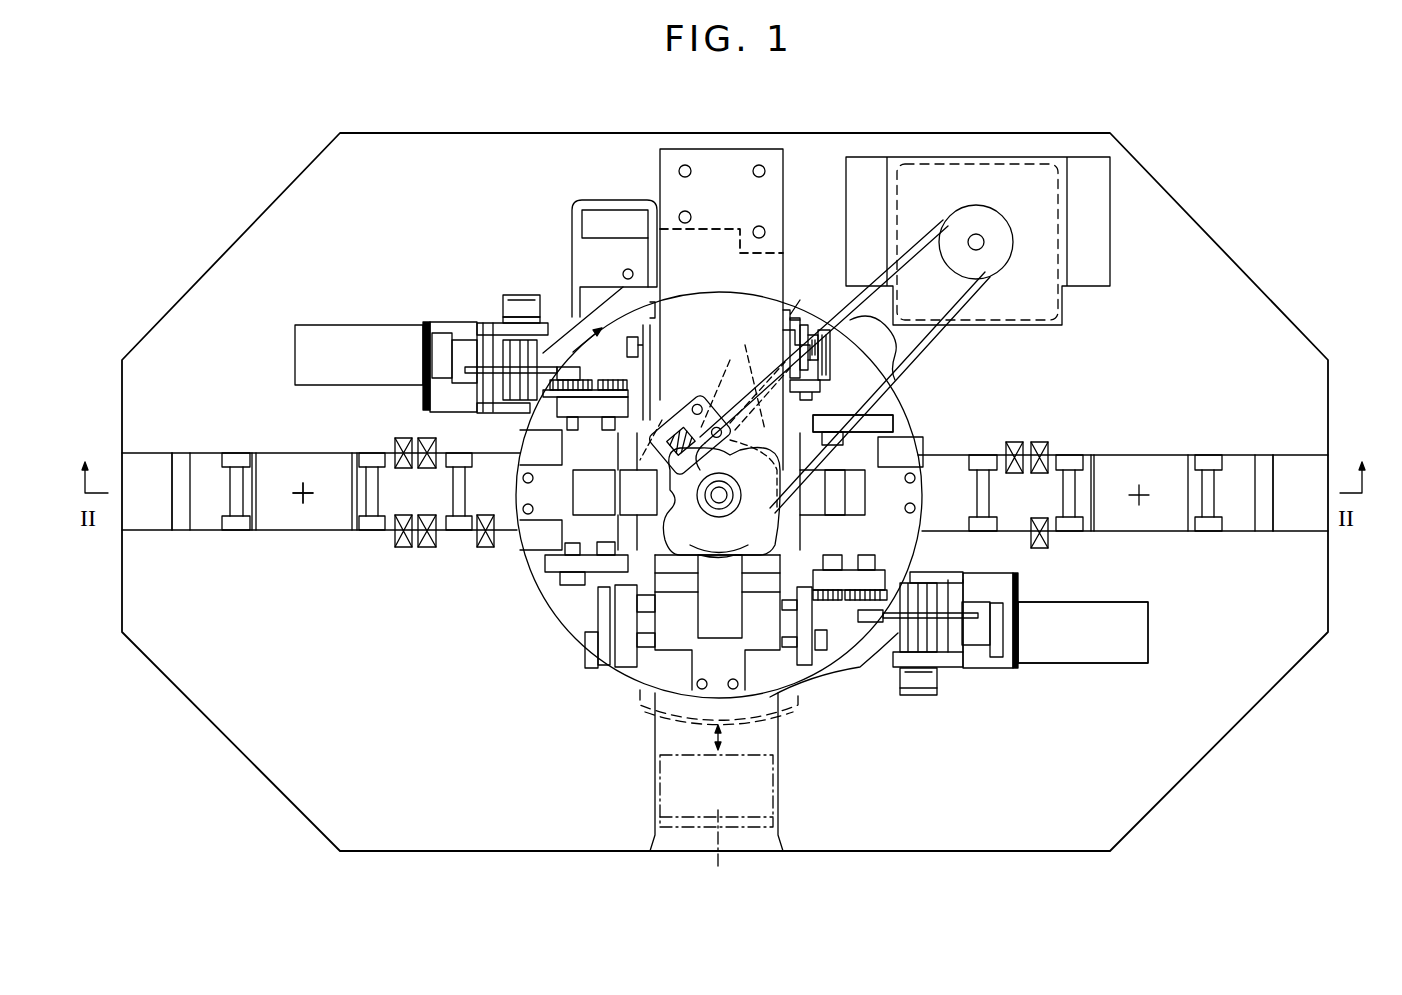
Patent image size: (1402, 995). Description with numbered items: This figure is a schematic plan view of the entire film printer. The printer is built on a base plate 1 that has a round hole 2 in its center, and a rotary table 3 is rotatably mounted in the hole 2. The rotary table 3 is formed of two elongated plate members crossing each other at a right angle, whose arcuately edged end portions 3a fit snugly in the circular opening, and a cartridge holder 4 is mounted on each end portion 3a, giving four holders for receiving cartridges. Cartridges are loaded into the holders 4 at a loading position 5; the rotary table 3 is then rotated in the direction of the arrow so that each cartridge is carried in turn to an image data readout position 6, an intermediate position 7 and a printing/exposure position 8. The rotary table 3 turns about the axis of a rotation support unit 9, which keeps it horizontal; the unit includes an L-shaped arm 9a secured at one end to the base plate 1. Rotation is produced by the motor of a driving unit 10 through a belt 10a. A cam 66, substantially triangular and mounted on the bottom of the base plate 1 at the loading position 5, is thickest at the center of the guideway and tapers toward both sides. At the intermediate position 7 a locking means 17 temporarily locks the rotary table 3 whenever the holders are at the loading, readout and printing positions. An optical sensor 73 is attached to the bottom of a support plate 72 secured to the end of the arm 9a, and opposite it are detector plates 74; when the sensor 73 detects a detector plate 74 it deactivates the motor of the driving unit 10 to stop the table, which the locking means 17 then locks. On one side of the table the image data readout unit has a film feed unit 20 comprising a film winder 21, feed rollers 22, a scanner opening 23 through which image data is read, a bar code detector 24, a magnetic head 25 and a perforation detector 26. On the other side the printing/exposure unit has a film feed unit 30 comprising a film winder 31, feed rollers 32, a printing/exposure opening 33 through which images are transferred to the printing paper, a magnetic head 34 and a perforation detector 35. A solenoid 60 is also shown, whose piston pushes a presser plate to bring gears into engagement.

The base plate 1 is at (404, 133).
The round hole 2 is at (555, 585).
The rotary table 3 is at (600, 620).
The arcuately edged end portions 3a is at (675, 675).
The cartridge holder 4 is at (637, 323).
The loading position 5 is at (670, 745).
The image data readout position 6 is at (500, 485).
The intermediate position 7 is at (800, 290).
The printing/exposure position 8 is at (935, 485).
The rotation support unit 9 is at (715, 280).
The L-shaped arm 9a is at (680, 255).
The driving unit 10 is at (1072, 305).
The belt 10a is at (940, 335).
The locking means 17 is at (600, 258).
The film feed unit 20 is at (240, 445).
The film winder 21 is at (152, 532).
The feed rollers 22 is at (420, 448).
The scanner opening 23 is at (292, 532).
The bar code detector 24 is at (428, 549).
The magnetic head 25 is at (427, 549).
The perforation detector 26 is at (486, 549).
The film feed unit 30 is at (1140, 442).
The film winder 31 is at (1291, 534).
The feed rollers 32 is at (985, 532).
The printing/exposure opening 33 is at (1158, 534).
The magnetic head 34 is at (1040, 441).
The perforation detector 35 is at (1015, 441).
The solenoid 60 is at (1100, 664).
The cam 66 is at (770, 710).
The support plate 72 is at (660, 420).
The optical sensor 73 is at (690, 410).
The detector plates 74 is at (753, 414).